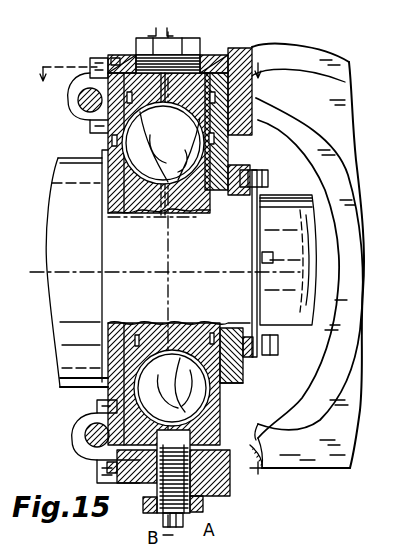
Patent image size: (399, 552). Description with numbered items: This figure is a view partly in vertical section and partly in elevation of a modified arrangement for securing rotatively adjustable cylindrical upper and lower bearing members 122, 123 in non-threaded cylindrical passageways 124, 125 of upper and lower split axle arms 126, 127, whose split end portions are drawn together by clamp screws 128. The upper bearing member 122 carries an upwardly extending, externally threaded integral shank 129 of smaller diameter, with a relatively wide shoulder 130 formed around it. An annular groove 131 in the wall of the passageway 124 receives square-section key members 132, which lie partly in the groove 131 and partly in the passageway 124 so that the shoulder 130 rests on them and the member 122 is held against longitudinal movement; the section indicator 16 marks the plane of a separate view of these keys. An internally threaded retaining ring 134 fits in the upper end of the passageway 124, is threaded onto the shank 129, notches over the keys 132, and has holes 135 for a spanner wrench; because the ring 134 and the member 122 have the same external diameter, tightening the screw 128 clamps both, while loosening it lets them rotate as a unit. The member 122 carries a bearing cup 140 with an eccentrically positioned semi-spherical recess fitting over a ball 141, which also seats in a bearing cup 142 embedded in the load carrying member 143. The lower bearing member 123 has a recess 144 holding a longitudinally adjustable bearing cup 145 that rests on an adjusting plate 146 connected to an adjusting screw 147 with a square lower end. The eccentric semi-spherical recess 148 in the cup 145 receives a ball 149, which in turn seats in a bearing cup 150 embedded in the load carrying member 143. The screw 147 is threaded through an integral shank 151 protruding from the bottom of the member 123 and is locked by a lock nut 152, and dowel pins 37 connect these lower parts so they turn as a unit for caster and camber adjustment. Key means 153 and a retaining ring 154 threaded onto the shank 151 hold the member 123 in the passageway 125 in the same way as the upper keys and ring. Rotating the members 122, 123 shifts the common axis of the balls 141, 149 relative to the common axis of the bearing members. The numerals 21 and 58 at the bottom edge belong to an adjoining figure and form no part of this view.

The section line 16 is at (160, 63).
The dowel pins 37 is at (172, 269).
The upper bearing member 122 is at (262, 102).
The lower bearing member 123 is at (243, 403).
The passageway 124 is at (262, 82).
The passageway 125 is at (260, 437).
The upper split axle arm 126 is at (267, 121).
The lower split axle arm 127 is at (258, 470).
The clamp screw 128 is at (78, 100).
The shank 129 is at (110, 62).
The shoulder 130 is at (100, 117).
The annular groove 131 is at (277, 46).
The key members 132 is at (100, 80).
The retaining ring 134 is at (163, 143).
The holes 135 is at (120, 55).
The bearing cup 140 is at (107, 128).
The ball 141 is at (102, 183).
The bearing cup 142 is at (142, 213).
The load carrying member 143 is at (65, 252).
The recess 144 is at (97, 458).
The bearing cup 145 is at (96, 406).
The adjusting plate 146 is at (100, 472).
The adjusting screw 147 is at (200, 507).
The semi-spherical recess 148 is at (258, 423).
The ball 149 is at (245, 311).
The bearing cup 150 is at (227, 323).
The shank 151 is at (145, 495).
The lock nut 152 is at (150, 515).
The key means 153 is at (257, 472).
The retaining ring 154 is at (216, 478).
The other figure numeral 21 is at (77, 549).
The other figure numeral 58 is at (24, 547).